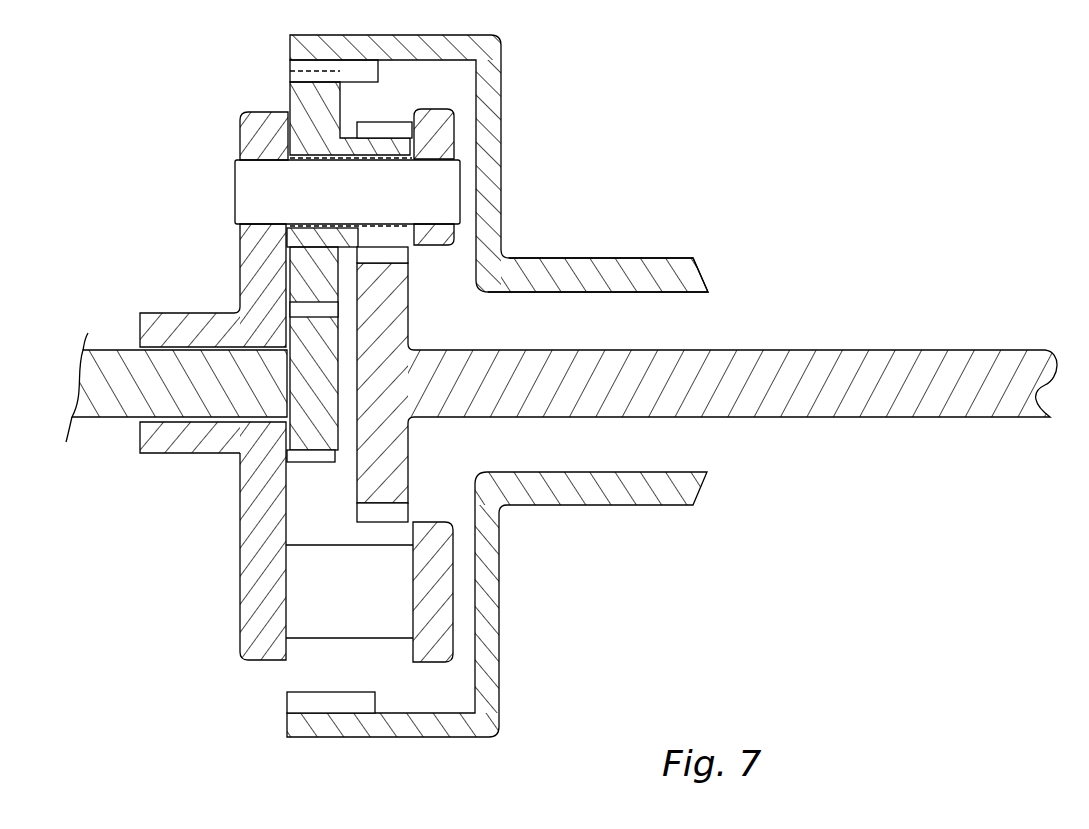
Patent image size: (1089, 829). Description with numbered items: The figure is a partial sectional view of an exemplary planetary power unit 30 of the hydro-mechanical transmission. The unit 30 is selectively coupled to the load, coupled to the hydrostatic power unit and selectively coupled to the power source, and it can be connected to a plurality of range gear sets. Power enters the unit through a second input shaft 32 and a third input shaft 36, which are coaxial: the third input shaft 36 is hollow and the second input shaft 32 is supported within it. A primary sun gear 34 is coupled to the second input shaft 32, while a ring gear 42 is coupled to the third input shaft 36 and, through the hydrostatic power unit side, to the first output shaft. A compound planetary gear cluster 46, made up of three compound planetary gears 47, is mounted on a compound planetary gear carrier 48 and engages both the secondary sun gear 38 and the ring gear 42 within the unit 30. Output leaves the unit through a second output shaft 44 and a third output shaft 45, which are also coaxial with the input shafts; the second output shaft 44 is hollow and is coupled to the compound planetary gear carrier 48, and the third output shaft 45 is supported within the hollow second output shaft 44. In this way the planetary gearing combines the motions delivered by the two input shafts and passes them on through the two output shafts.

The planetary power unit 30 is at (733, 538).
The second input shaft 32 is at (707, 397).
The primary sun gear 34 is at (407, 487).
The third input shaft 36 is at (602, 258).
The secondary sun gear 38 is at (313, 466).
The ring gear 42 is at (501, 97).
The second output shaft 44 is at (187, 312).
The third output shaft 45 is at (103, 420).
The compound planetary gear cluster 46 is at (226, 101).
The compound planetary gear 47 is at (287, 97).
The compound planetary gear carrier 48 is at (240, 140).